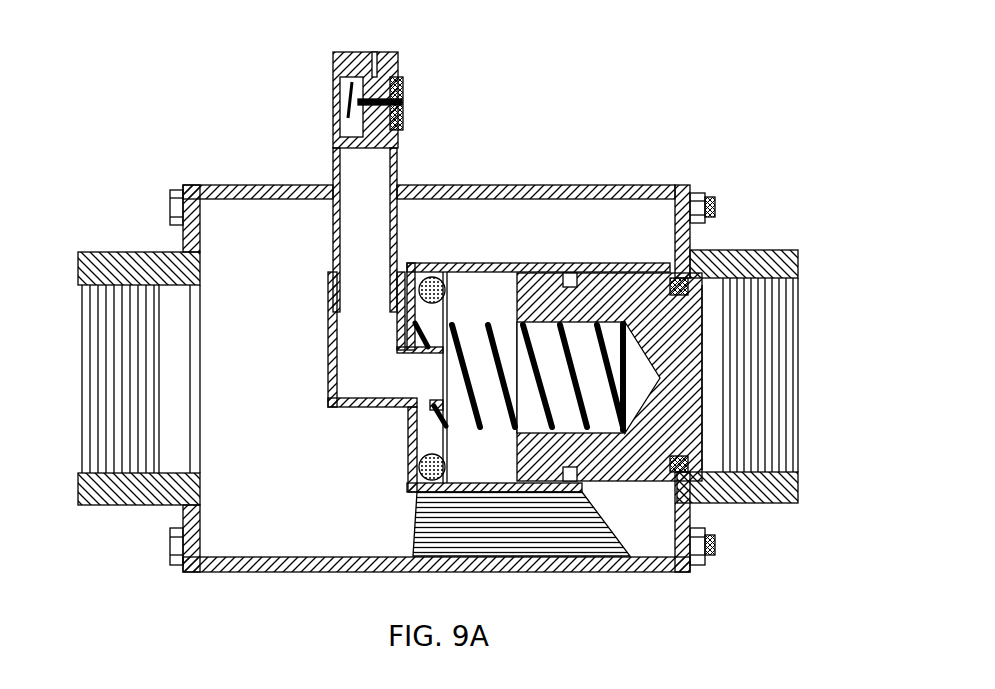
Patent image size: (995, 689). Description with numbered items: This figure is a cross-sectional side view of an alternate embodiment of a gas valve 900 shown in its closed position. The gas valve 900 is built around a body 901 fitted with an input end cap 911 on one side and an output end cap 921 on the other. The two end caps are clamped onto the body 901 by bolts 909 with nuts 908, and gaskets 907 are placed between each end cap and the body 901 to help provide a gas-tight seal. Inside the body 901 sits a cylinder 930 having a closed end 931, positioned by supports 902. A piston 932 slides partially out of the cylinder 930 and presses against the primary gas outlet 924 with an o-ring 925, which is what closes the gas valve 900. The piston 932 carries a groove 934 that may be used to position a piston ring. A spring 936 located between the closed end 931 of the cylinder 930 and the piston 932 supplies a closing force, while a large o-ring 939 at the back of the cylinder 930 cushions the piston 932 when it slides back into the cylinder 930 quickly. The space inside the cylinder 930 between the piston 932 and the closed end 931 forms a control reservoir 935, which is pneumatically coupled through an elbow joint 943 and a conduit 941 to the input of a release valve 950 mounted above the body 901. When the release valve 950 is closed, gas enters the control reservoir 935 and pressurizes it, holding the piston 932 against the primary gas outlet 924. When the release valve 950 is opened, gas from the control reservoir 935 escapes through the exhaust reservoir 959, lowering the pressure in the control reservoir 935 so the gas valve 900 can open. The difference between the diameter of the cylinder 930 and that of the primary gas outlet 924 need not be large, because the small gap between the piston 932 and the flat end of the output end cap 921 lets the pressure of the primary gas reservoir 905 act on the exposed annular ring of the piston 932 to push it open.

The gas valve 900 is at (461, 330).
The body 901 is at (608, 185).
The supports 902 is at (630, 554).
The primary gas reservoir 905 is at (295, 522).
The gaskets 907 is at (663, 185).
The nuts 908 is at (702, 190).
The bolts 909 is at (172, 192).
The input end cap 911 is at (140, 252).
The output end cap 921 is at (780, 250).
The primary gas outlet 924 is at (703, 461).
The o-ring 925 is at (687, 280).
The cylinder 930 is at (483, 263).
The closed end 931 is at (405, 434).
The piston 932 is at (627, 273).
The groove 934 is at (520, 495).
The control reservoir 935 is at (480, 465).
The spring 936 is at (491, 432).
The large o-ring 939 is at (428, 440).
The conduit 941 is at (335, 232).
The elbow joint 943 is at (330, 340).
The release valve 950 is at (414, 97).
The exhaust reservoir 959 is at (357, 46).